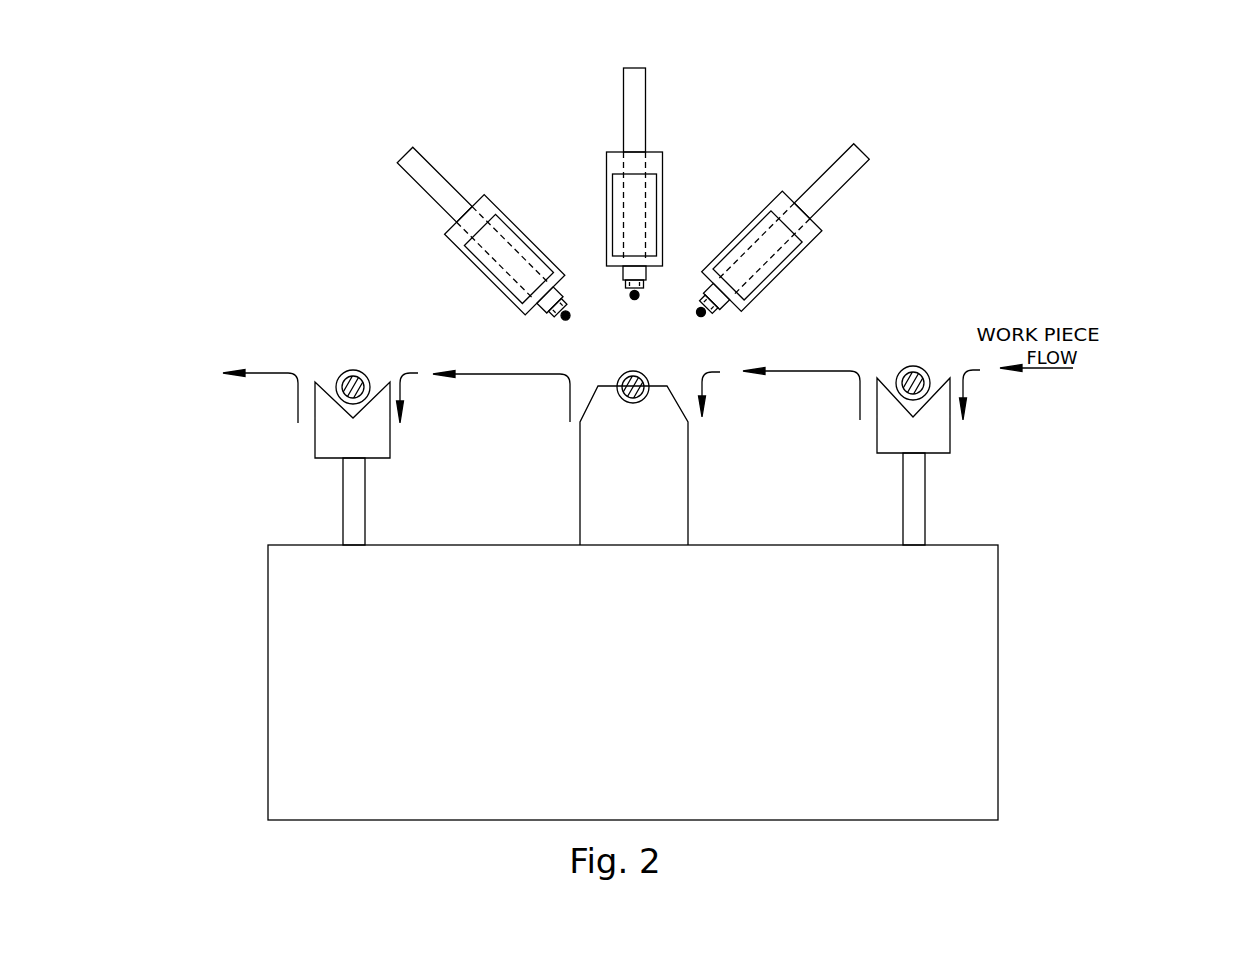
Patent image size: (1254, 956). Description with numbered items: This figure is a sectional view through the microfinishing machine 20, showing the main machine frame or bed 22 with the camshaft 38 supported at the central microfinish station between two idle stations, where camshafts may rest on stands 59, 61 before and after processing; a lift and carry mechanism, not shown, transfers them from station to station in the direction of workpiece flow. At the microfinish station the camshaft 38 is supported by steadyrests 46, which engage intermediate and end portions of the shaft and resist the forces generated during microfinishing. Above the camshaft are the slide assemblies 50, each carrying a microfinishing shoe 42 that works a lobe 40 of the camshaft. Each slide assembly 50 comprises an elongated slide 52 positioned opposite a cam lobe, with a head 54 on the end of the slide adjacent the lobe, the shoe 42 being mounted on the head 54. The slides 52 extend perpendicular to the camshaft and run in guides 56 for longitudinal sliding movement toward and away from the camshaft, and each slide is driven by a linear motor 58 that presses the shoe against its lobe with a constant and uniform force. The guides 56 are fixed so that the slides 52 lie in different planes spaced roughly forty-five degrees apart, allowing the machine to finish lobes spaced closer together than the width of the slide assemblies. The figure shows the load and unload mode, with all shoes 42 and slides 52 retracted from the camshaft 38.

The microfinishing machine 20 is at (1045, 491).
The main machine frame 22 is at (953, 676).
The camshaft 38 is at (607, 371).
The lobes 40 is at (647, 382).
The microfinishing shoes 42 is at (566, 317).
The steadyrests 46 is at (692, 475).
The slide assembly 50 is at (656, 198).
The slide 52 is at (443, 175).
The head 54 is at (562, 297).
The guides 56 is at (538, 247).
The linear motor 58 is at (498, 293).
The stand 59 is at (343, 497).
The stand 61 is at (903, 492).